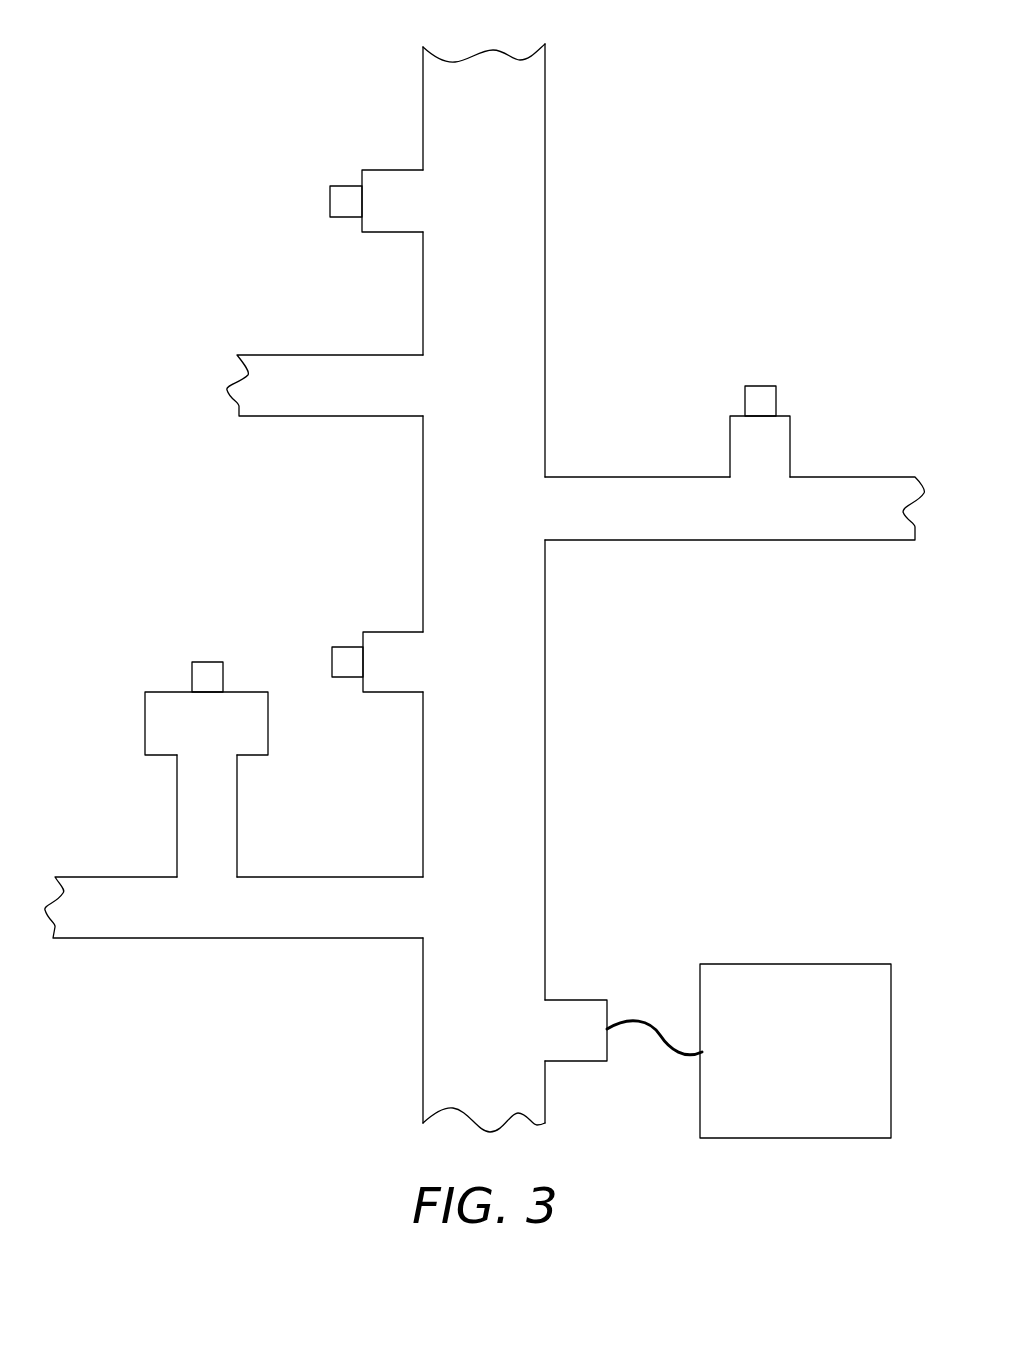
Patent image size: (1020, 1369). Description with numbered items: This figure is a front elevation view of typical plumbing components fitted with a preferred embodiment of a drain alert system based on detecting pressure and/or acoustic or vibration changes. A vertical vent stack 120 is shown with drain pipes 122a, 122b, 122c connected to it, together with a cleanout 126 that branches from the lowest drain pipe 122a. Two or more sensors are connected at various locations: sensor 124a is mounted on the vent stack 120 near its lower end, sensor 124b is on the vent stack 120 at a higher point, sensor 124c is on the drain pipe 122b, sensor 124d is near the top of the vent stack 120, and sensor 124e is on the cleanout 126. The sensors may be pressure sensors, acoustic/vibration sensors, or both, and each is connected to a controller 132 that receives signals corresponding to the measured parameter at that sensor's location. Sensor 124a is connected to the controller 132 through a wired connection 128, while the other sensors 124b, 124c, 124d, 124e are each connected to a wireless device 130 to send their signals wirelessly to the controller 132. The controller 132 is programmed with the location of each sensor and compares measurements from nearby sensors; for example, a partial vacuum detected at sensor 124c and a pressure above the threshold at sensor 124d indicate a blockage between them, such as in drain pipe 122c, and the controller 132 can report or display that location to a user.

The vent stack 120 is at (546, 768).
The drain pipe 122a is at (313, 938).
The drain pipe 122b is at (683, 540).
The drain pipe 122c is at (330, 355).
The sensor 124a is at (575, 1000).
The sensor 124b is at (392, 630).
The sensor 124c is at (791, 447).
The sensor 124d is at (390, 170).
The sensor 124e is at (145, 723).
The cleanout 126 is at (177, 815).
The wired connection 128 is at (650, 1040).
The wireless device 130 is at (330, 202).
The controller 132 is at (794, 964).